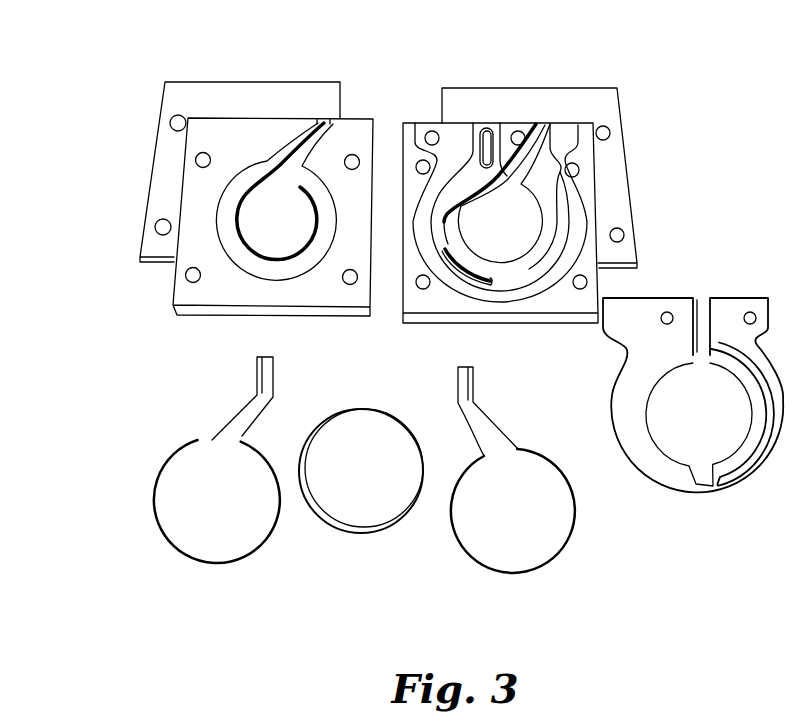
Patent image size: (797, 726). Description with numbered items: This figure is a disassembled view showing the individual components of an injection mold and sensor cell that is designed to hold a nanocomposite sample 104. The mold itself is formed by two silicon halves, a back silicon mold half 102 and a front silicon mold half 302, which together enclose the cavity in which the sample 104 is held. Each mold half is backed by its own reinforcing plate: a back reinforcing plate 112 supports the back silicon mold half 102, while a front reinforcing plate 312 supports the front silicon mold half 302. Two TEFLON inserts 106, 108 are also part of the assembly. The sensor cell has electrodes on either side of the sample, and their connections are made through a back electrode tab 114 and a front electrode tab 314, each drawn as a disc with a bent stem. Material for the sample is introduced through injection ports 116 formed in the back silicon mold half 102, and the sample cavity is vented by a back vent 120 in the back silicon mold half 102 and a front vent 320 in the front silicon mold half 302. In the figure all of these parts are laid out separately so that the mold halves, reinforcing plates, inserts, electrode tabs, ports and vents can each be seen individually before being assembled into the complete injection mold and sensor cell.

The back silicon mold half 102 is at (598, 165).
The nanocomposite sample 104 is at (333, 527).
The TEFLON insert 106 is at (693, 431).
The TEFLON insert 108 is at (752, 420).
The back reinforcing plate 112 is at (620, 106).
The back electrode tab 114 is at (473, 373).
The injection ports 116 is at (473, 127).
The back vent 120 is at (547, 124).
The front silicon mold half 302 is at (216, 167).
The front reinforcing plate 312 is at (160, 108).
The front electrode tab 314 is at (257, 372).
The front vent 320 is at (332, 122).